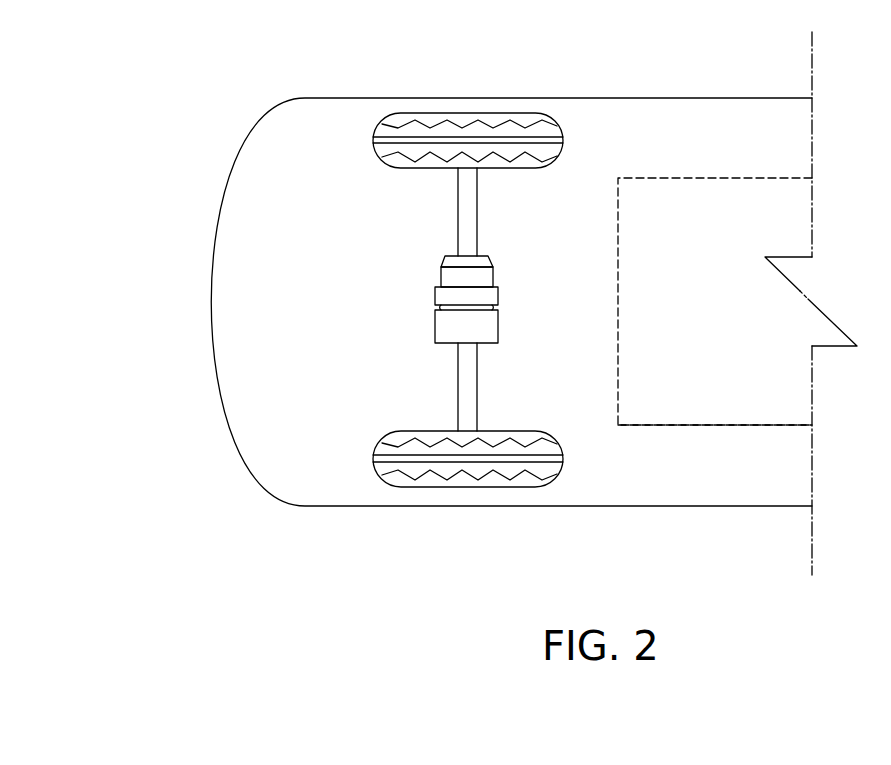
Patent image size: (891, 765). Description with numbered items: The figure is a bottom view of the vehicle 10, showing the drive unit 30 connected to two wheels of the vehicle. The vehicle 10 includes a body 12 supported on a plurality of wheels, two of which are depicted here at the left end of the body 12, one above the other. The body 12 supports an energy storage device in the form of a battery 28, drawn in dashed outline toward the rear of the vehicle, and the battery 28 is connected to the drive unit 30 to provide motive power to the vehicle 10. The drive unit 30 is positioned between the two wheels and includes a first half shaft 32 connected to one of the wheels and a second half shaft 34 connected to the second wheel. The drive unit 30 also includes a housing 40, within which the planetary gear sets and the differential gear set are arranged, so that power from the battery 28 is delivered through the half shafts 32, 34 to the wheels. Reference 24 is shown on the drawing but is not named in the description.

The vehicle 10 is at (472, 281).
The body 12 is at (197, 95).
The payload area 24 is at (726, 426).
The battery 28 is at (765, 385).
The drive unit 30 is at (430, 286).
The first half shaft 32 is at (468, 394).
The second half shaft 34 is at (468, 216).
The housing 40 is at (447, 331).